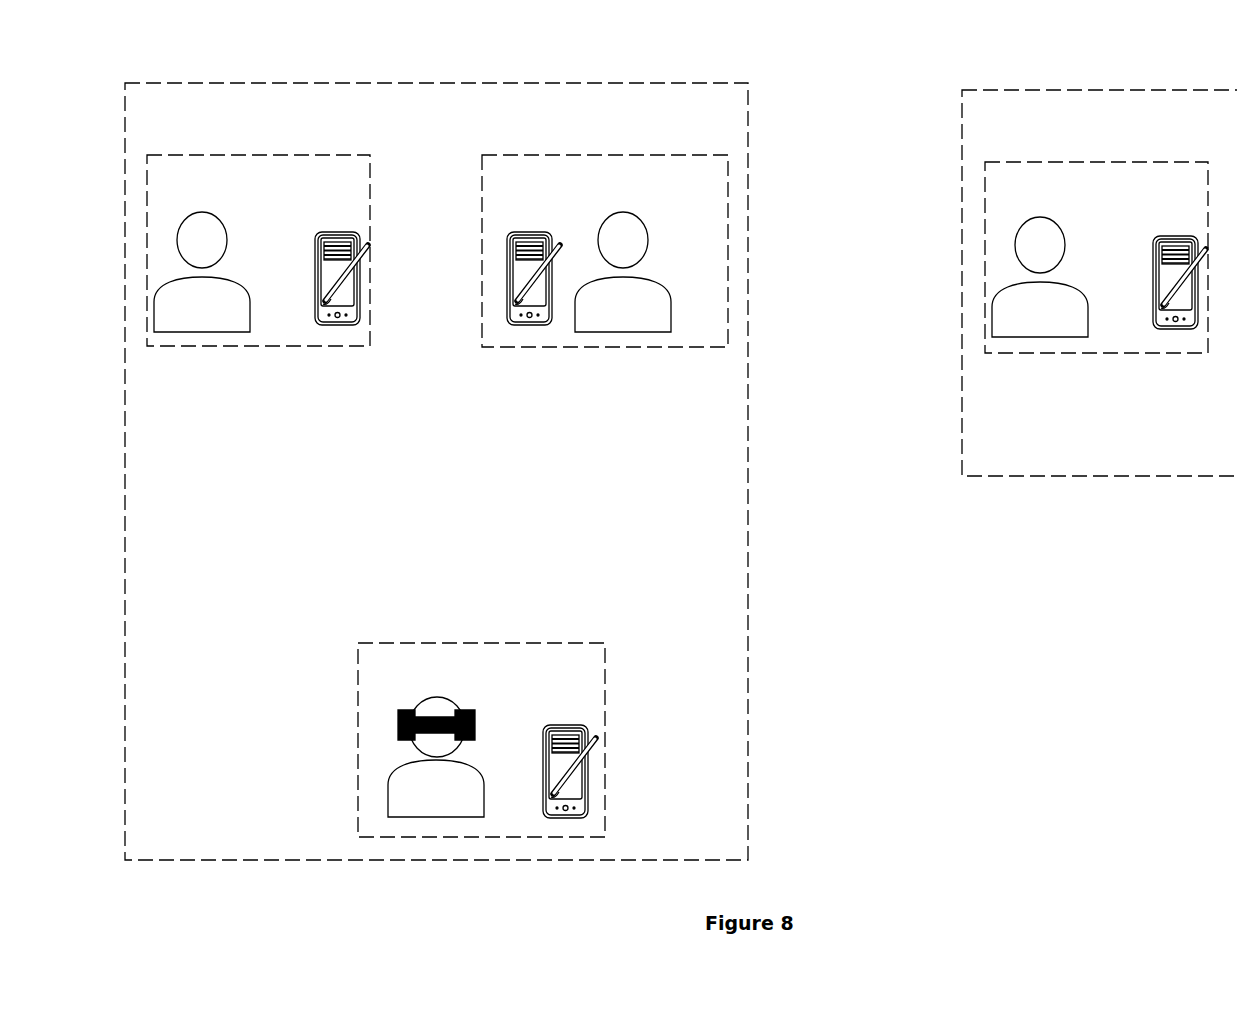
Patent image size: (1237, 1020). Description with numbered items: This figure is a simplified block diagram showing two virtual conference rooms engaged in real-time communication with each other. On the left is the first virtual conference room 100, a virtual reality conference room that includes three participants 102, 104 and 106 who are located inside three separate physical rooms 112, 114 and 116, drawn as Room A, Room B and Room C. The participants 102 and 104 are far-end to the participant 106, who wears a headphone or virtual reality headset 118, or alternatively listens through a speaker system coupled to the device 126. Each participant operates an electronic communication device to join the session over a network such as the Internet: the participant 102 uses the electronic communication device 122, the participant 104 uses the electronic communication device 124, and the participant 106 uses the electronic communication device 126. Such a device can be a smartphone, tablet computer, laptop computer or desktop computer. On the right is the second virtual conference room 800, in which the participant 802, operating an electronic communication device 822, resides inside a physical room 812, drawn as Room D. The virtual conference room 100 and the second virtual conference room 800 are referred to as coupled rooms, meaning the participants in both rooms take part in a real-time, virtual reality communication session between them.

The virtual conference room 100 is at (272, 82).
The physical room 112 is at (282, 152).
The physical room 114 is at (585, 152).
The physical room 116 is at (463, 642).
The participant 102 is at (230, 278).
The participant 104 is at (643, 277).
The participant 106 is at (457, 762).
The headphone 118 is at (473, 718).
The electronic communication device 122 is at (332, 325).
The electronic communication device 124 is at (510, 348).
The electronic communication device 126 is at (588, 785).
The second virtual conference room 800 is at (1135, 88).
The physical room 812 is at (1117, 157).
The participant 802 is at (1060, 282).
The electronic communication device 822 is at (1168, 332).